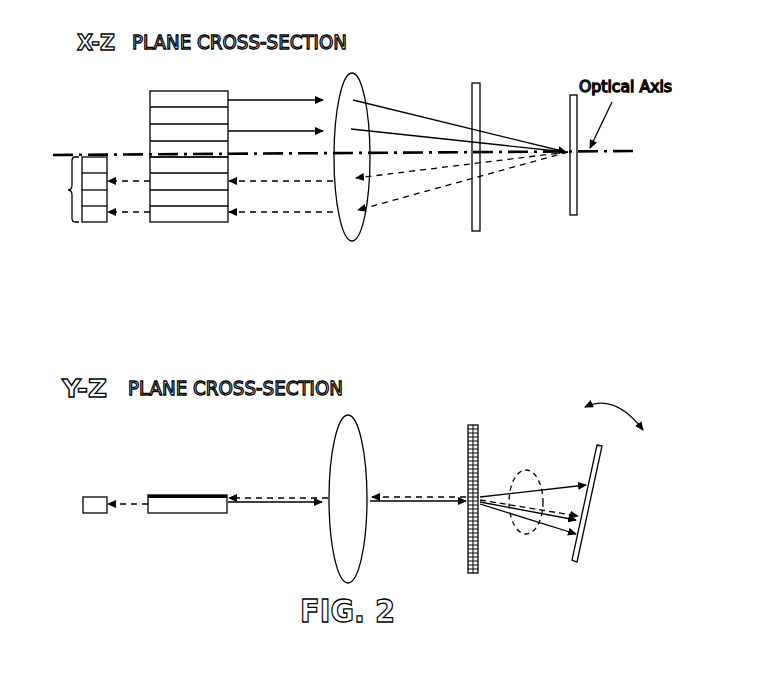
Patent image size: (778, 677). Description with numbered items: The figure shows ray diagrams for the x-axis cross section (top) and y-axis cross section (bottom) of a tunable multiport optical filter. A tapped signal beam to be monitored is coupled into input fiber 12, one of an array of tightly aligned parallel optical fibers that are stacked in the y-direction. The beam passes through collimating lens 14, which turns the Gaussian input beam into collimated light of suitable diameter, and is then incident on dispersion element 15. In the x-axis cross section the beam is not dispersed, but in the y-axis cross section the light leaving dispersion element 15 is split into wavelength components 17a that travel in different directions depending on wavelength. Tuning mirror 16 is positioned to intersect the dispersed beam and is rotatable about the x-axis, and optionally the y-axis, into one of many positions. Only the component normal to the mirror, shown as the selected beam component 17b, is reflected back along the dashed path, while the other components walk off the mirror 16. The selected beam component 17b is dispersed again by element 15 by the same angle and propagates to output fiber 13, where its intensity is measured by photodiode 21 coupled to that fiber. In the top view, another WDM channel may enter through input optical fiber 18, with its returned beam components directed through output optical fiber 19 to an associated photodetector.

The input fiber 12 is at (188, 90).
The output fiber 13 is at (201, 223).
The collimating lens 14 is at (360, 85).
The dispersion element 15 is at (473, 82).
The tuning mirror 16 is at (571, 94).
The wavelength components 17a is at (515, 478).
The selected beam component 17b is at (563, 517).
The input optical fiber 18 is at (231, 130).
The output optical fiber 19 is at (232, 177).
The photodiode 21 is at (83, 506).